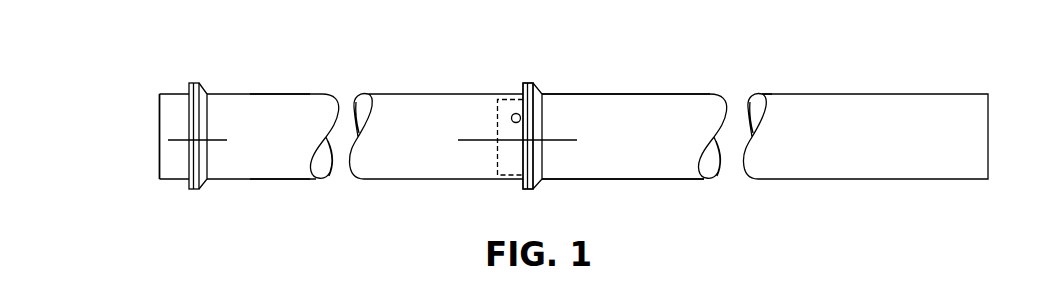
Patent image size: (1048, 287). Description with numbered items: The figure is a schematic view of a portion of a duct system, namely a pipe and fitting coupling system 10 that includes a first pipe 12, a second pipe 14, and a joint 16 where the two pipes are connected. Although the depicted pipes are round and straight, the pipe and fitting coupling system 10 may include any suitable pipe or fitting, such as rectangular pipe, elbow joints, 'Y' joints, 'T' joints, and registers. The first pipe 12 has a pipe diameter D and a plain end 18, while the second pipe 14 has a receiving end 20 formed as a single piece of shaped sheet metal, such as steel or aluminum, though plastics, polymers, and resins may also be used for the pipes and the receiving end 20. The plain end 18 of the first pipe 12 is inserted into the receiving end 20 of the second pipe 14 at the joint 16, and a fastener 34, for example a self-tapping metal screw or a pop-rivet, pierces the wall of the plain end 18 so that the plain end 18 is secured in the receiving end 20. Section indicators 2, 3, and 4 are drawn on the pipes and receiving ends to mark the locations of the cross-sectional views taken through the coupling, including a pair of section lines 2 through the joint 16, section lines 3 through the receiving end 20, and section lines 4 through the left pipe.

The pipe and fitting coupling system 10 is at (627, 59).
The first pipe 12 is at (398, 86).
The second pipe 14 is at (666, 91).
The joint 16 is at (528, 81).
The plain end 18 is at (515, 88).
The receiving end 20 is at (200, 80).
The fastener 34 is at (511, 118).
The section line 2- 2 is at (461, 140).
The section line 3- 3 is at (178, 109).
The section line 4- 4 is at (173, 140).
The pipe diameter D is at (280, 227).